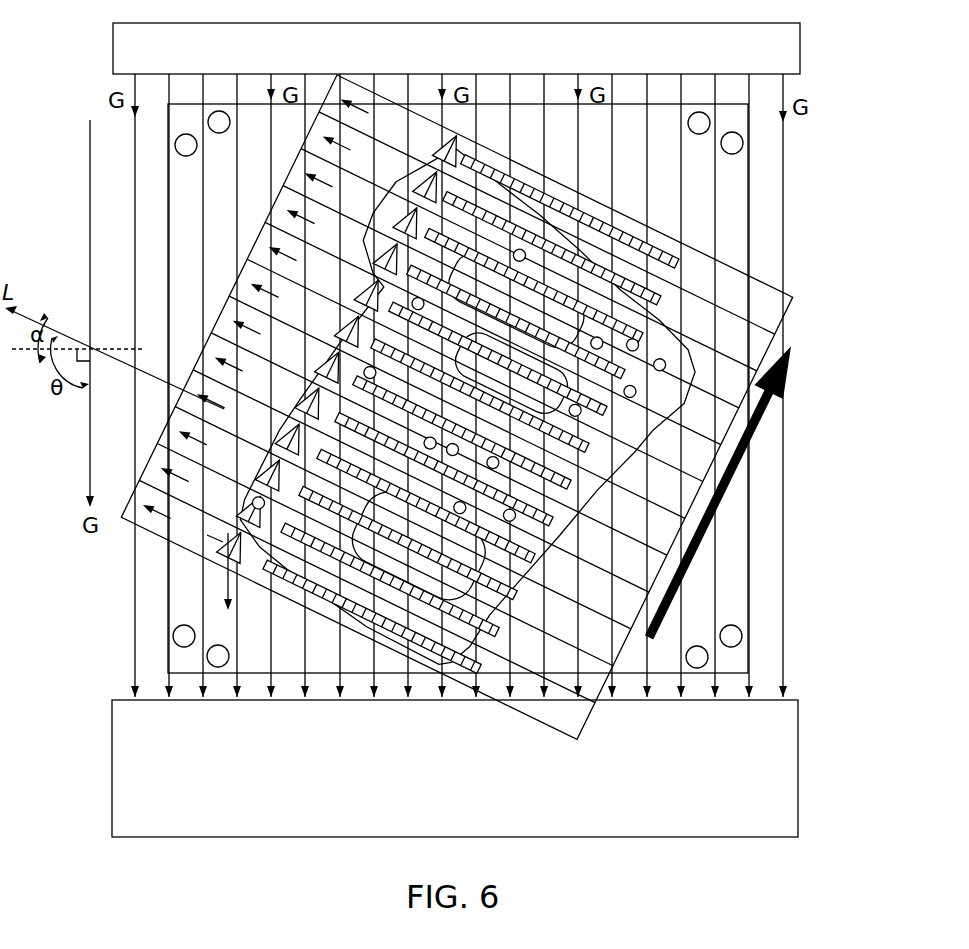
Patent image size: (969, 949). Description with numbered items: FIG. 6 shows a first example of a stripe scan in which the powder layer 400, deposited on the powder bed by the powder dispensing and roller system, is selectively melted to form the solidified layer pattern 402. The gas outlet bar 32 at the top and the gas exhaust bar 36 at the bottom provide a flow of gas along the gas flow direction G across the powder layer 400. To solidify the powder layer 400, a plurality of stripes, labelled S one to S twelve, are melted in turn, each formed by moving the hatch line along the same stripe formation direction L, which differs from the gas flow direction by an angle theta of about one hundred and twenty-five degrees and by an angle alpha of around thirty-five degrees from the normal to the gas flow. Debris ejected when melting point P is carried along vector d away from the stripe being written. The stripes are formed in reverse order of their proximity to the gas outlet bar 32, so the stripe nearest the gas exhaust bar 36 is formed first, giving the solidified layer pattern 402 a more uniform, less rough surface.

The gas outlet bar 32 is at (792, 48).
The gas exhaust bar 36 is at (766, 761).
The powder layer 400 is at (738, 210).
The solidified layer pattern 402 is at (367, 627).